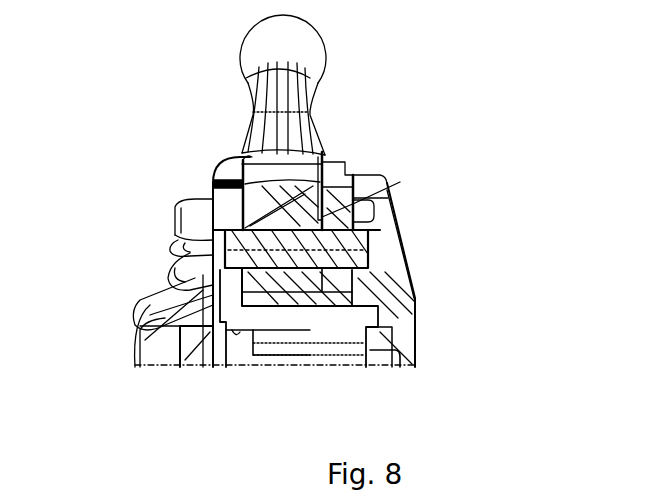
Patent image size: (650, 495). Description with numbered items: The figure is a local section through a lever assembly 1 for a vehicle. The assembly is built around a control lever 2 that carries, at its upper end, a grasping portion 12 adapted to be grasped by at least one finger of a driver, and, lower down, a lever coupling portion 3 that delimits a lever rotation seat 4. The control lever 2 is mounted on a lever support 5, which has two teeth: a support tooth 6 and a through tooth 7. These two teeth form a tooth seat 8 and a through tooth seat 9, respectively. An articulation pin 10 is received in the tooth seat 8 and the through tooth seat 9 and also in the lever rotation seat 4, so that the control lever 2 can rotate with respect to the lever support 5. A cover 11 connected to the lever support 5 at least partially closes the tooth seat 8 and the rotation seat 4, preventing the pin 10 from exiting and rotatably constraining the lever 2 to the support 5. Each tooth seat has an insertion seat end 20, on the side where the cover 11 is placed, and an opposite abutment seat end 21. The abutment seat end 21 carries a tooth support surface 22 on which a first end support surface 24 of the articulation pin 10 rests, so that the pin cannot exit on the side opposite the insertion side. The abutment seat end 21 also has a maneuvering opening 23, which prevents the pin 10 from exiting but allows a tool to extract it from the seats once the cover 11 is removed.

The lever assembly 1 is at (374, 83).
The control lever 2 is at (300, 158).
The lever coupling portion 3 is at (303, 188).
The lever rotation seat 4 is at (303, 264).
The lever support 5 is at (212, 318).
The support tooth 6 is at (213, 220).
The through tooth 7 is at (402, 189).
The tooth seat 8 is at (178, 240).
The through tooth seat 9 is at (417, 273).
The articulation pin 10 is at (330, 246).
The cover 11 is at (417, 290).
The grasping portion 12 is at (254, 120).
The insertion seat end 20 is at (222, 184).
The opposite abutment seat end 21 is at (185, 320).
The tooth support surface 22 is at (232, 270).
The maneuvering opening 23 is at (195, 278).
The first end support surface 24 is at (190, 253).